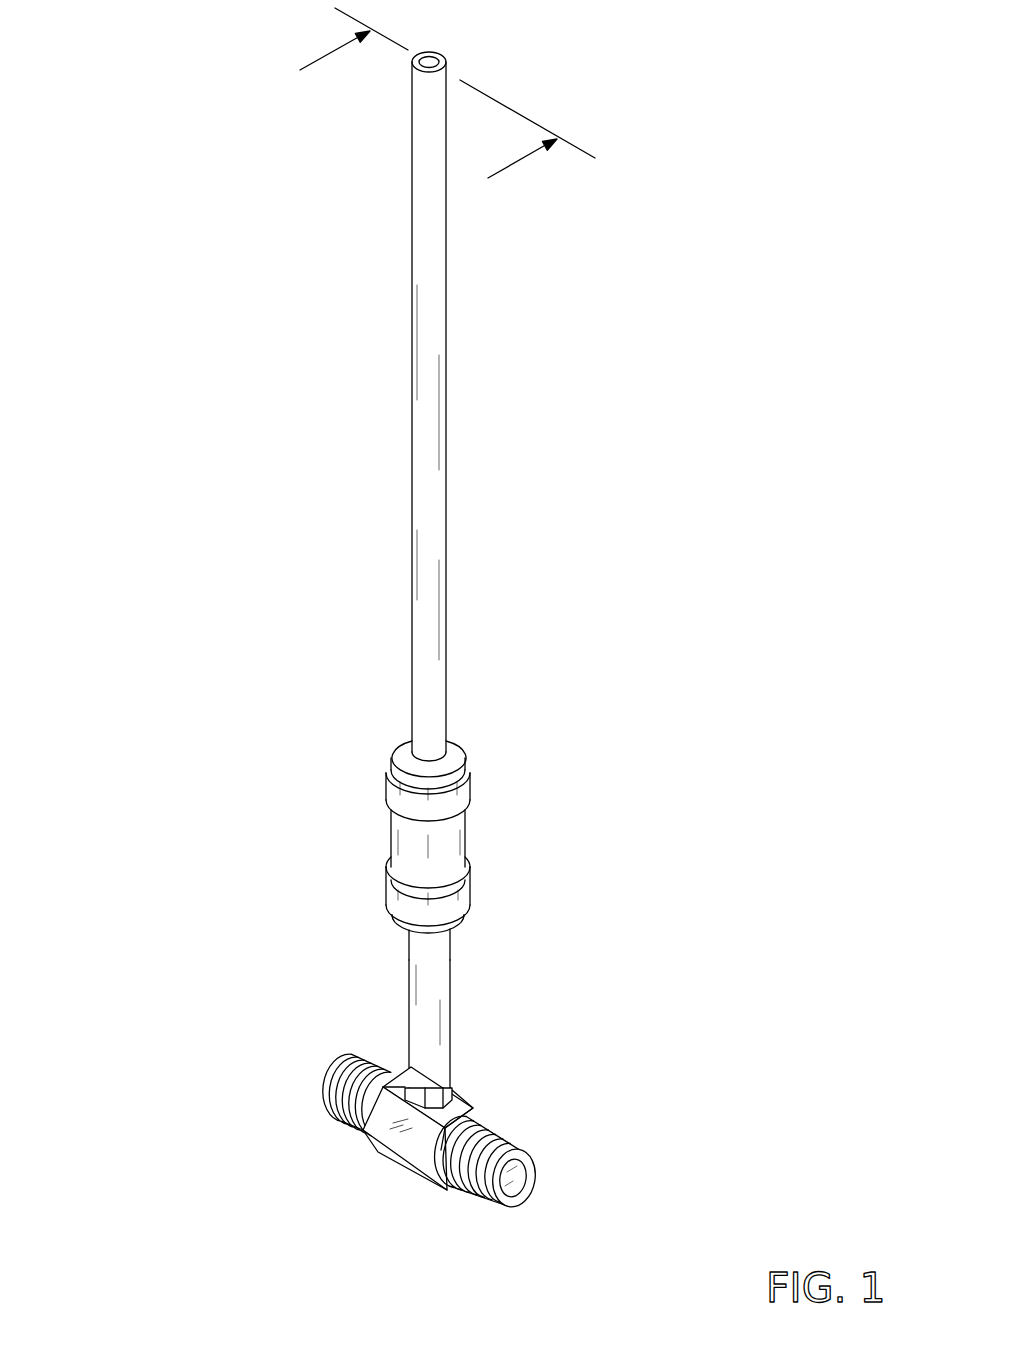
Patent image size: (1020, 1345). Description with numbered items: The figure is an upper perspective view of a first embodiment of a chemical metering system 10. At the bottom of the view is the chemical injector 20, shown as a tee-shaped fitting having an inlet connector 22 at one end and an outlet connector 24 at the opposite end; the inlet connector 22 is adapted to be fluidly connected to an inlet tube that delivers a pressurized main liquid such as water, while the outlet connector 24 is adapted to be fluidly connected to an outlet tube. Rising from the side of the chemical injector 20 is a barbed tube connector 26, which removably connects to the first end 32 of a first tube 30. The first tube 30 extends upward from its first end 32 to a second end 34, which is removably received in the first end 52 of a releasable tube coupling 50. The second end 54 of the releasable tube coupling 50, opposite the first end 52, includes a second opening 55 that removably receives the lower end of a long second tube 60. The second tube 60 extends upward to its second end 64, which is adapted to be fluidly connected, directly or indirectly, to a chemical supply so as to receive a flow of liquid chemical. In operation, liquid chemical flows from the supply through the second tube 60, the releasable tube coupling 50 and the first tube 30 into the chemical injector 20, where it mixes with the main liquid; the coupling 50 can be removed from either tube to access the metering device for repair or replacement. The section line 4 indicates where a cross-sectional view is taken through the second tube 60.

The chemical metering system 10 is at (183, 174).
The section line 4 is at (435, 108).
The chemical injector 20 is at (446, 1094).
The inlet connector 22 is at (322, 1077).
The outlet connector 24 is at (537, 1177).
The barbed tube connector 26 is at (452, 1098).
The first tube 30 is at (360, 972).
The first end of first tube 32 is at (407, 1083).
The second end of first tube 34 is at (407, 940).
The releasable tube coupling 50 is at (470, 805).
The first end of releasable tube coupling 52 is at (457, 928).
The second end of releasable tube coupling 54 is at (440, 745).
The second opening 55 is at (410, 757).
The second tube 60 is at (508, 384).
The second end of second tube 64 is at (437, 55).